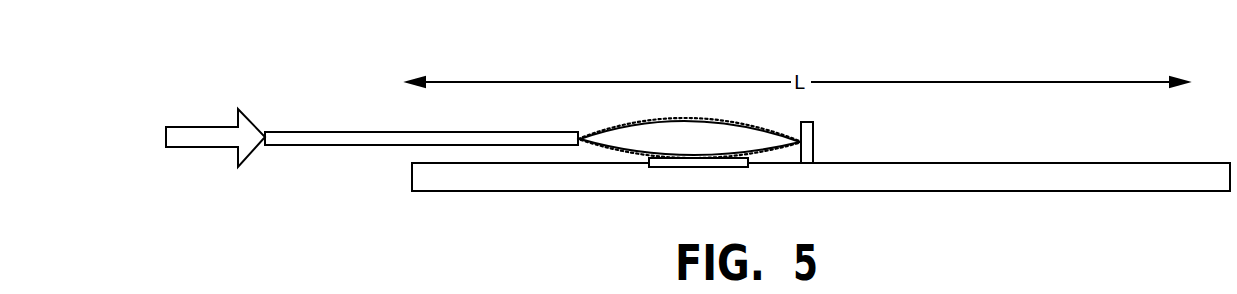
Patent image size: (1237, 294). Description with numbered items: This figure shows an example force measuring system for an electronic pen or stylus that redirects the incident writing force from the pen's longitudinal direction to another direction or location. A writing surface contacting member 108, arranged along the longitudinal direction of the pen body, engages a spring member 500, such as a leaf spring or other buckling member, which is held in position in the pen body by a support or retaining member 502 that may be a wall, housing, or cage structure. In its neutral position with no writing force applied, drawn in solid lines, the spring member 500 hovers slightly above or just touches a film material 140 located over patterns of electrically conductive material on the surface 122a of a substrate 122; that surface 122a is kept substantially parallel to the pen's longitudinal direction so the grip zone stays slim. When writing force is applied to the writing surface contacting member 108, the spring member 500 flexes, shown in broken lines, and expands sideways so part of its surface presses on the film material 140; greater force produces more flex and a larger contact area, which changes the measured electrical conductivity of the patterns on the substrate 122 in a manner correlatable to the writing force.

The writing surface contacting member 108 is at (317, 138).
The spring member 500 is at (624, 111).
The support or retaining member 502 is at (813, 137).
The substrate 122 is at (452, 182).
The substrate surface 122a is at (1002, 163).
The film material 140 is at (675, 165).